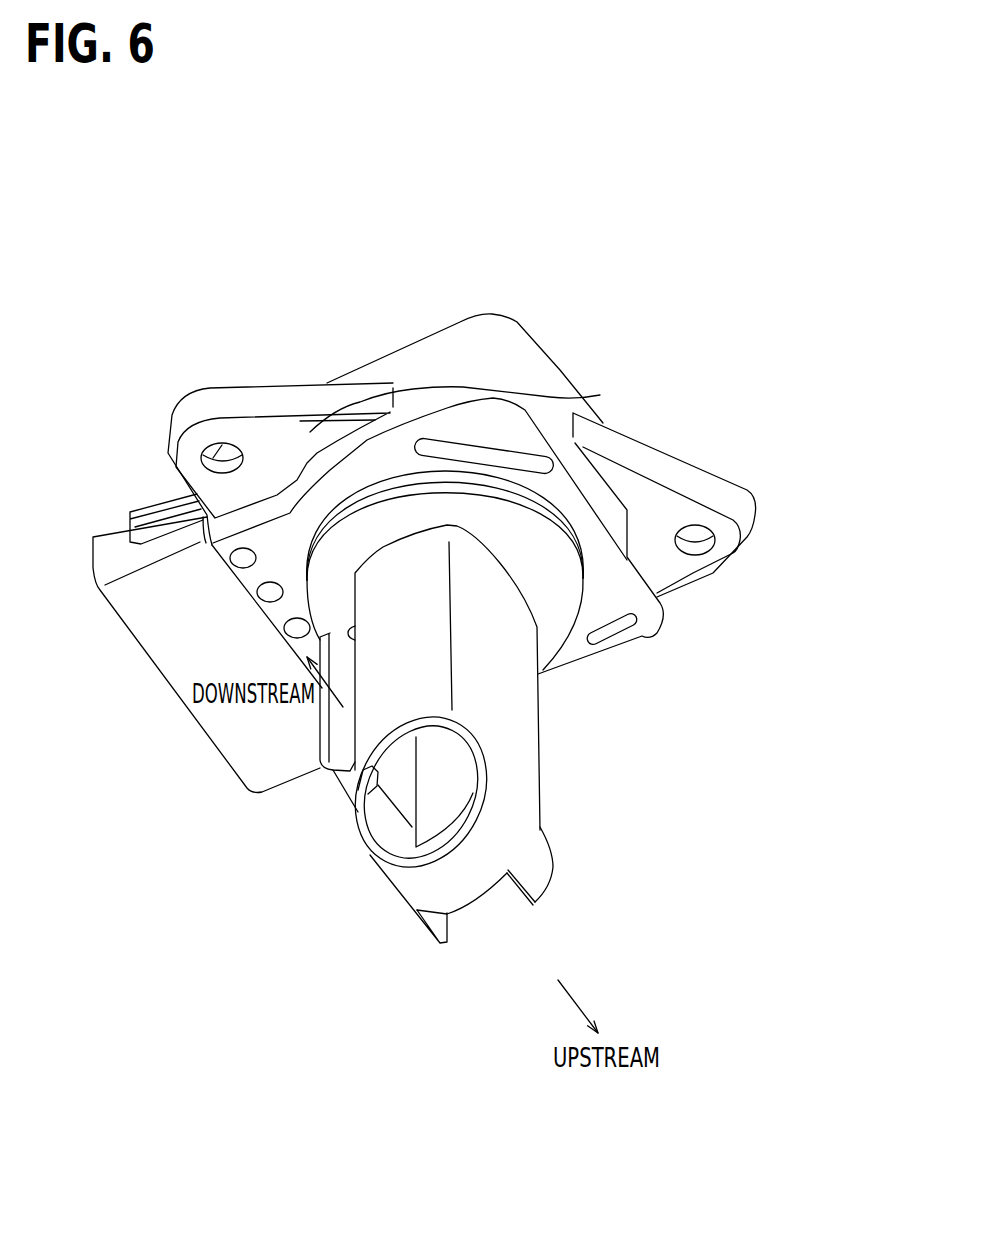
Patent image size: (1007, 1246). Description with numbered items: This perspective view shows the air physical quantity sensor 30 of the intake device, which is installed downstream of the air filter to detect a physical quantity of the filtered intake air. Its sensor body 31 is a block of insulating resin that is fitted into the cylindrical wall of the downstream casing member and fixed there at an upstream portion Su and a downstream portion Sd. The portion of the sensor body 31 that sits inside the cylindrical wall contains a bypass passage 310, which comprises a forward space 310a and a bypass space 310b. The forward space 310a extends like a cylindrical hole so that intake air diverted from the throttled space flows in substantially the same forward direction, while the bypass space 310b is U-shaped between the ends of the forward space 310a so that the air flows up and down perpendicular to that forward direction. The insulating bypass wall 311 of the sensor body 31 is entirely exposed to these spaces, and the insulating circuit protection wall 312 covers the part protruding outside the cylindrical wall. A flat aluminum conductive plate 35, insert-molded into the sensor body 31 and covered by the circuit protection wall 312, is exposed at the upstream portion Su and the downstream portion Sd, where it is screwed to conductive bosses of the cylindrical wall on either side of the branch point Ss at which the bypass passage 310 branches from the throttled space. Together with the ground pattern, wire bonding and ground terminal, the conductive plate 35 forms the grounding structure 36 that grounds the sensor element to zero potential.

The air physical quantity sensor 30 is at (242, 786).
The sensor body 31 is at (508, 628).
The bypass wall 311 is at (447, 743).
The circuit protection wall 312 is at (645, 632).
The bypass passage 310 is at (547, 791).
The forward space 310a is at (445, 827).
The bypass space 310b is at (416, 767).
The conductive plate 35 is at (600, 395).
The grounding structure 36 is at (647, 497).
The downstream portion Sd is at (193, 402).
The upstream portion Su is at (727, 545).
The branch point Ss is at (480, 898).